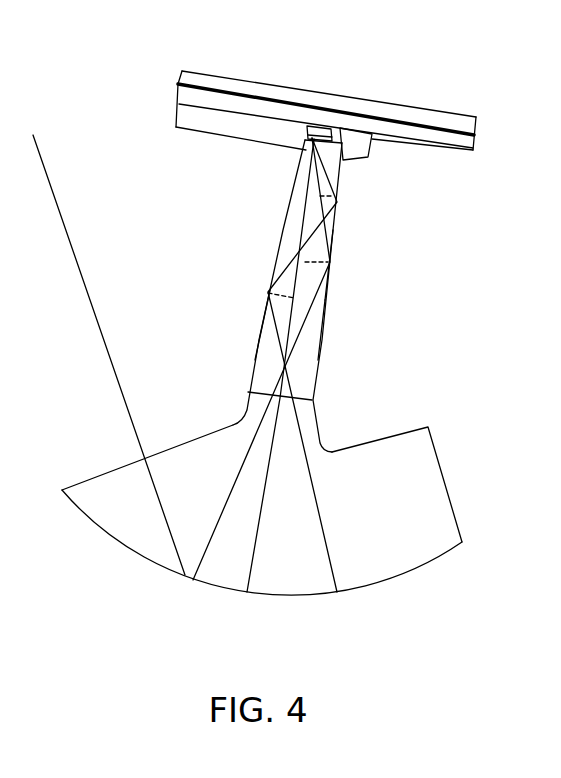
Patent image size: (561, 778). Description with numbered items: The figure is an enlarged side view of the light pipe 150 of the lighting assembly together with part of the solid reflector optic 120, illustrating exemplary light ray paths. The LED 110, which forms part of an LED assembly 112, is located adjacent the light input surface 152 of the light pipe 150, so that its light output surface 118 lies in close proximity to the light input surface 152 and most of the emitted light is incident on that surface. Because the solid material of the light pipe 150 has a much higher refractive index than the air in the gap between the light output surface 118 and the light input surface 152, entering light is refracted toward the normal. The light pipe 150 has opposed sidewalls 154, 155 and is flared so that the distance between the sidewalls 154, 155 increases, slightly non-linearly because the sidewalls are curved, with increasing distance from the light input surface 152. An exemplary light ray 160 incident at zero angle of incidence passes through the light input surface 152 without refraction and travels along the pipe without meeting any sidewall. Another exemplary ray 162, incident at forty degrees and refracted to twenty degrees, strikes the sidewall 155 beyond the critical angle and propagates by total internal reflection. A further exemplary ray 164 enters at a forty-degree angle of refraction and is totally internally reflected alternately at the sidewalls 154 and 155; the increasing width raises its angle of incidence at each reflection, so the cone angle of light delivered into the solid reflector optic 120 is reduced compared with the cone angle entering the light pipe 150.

The light-emitting diode (LED) 110 is at (318, 128).
The LED assembly 112 is at (464, 113).
The light output surface 118 is at (305, 140).
The solid reflector optic 120 is at (367, 515).
The light pipe 150 is at (300, 202).
The light input surface 152 is at (332, 135).
The sidewall 154 is at (253, 358).
The sidewall 155 is at (323, 310).
The light ray 160 is at (323, 330).
The light ray 162 is at (330, 235).
The light ray 164 is at (330, 172).